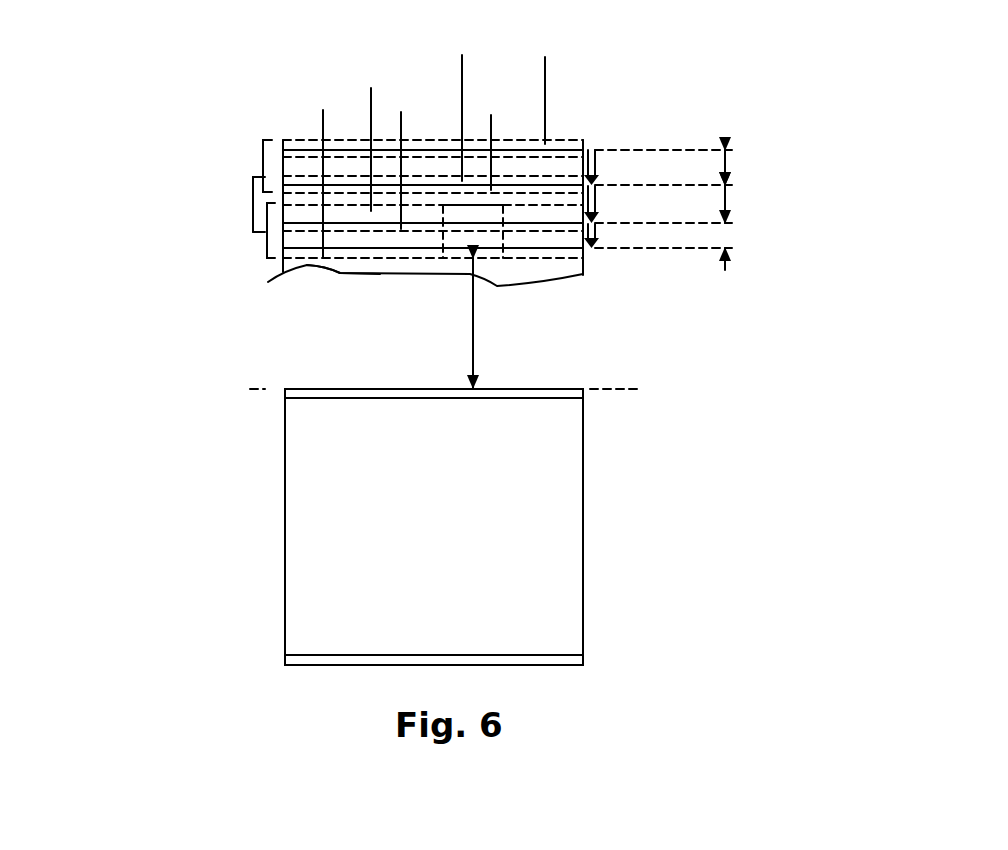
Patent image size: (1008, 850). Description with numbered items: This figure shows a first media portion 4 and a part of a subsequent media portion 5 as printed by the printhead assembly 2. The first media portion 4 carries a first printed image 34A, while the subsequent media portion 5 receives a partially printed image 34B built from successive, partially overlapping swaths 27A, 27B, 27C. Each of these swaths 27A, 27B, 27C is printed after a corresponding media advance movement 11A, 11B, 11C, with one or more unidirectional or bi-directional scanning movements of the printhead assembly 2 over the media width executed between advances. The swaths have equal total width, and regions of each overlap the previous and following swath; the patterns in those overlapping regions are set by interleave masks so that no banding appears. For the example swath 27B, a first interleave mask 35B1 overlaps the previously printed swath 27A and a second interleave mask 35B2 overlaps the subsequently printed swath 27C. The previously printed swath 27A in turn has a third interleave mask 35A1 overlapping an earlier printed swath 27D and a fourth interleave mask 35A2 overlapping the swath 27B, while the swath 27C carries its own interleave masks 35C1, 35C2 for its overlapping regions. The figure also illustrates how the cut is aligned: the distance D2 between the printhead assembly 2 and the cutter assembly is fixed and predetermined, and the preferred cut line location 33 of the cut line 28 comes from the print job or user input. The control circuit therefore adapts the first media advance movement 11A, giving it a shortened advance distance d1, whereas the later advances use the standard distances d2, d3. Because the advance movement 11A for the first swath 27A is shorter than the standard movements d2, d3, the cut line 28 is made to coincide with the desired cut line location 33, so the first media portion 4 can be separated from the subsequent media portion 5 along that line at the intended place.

The media portion 5 is at (283, 140).
The partially printed image 34B is at (315, 200).
The swath 27C is at (263, 175).
The swath 27B is at (253, 205).
The swath 27A is at (260, 233).
The earlier printed swath 27D is at (347, 265).
The third interleave mask 35A1 is at (325, 170).
The fourth interleave mask 35A2 is at (370, 129).
The first interleave mask 35B1 is at (422, 154).
The second interleave mask 35B2 is at (462, 97).
The interleave mask 35C1 is at (502, 136).
The interleave mask 35C2 is at (553, 81).
The media advance movement 11C is at (593, 167).
The media advance movement 11B is at (593, 203).
The media advance movement 11A is at (593, 238).
The standard advance movement d3 is at (749, 167).
The standard advance movement d2 is at (749, 204).
The media advance movement distance d1 is at (724, 246).
The printhead assembly 2 is at (503, 237).
The distance D2 is at (473, 343).
The first media portion 4 is at (285, 550).
The cut line 28 is at (314, 388).
The cut line location 33 is at (270, 390).
The first printed image 34A is at (357, 462).